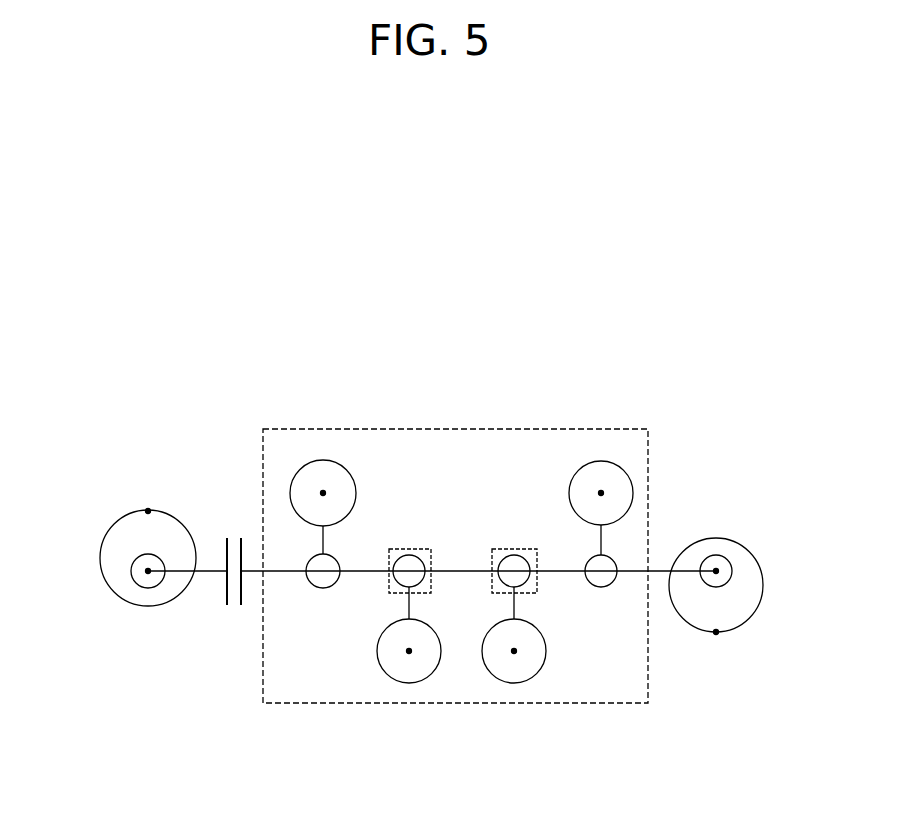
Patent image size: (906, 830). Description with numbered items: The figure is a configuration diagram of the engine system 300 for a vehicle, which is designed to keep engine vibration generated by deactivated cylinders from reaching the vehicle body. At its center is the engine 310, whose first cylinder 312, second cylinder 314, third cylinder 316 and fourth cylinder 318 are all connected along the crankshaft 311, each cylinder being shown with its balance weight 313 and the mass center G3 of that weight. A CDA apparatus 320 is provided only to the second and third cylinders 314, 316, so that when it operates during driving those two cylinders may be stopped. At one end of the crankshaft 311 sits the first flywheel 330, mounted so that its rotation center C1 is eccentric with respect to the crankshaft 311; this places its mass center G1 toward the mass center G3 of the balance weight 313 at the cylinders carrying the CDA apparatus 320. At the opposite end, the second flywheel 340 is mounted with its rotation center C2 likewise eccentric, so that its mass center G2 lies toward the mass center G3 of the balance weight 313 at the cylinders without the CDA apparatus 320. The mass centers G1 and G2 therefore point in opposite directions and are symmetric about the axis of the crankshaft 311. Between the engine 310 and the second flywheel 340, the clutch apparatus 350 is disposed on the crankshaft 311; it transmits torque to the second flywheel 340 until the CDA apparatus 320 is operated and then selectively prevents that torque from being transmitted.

The engine system 300 is at (392, 335).
The engine 310 is at (457, 429).
The crankshaft 311 is at (283, 572).
The first cylinder 312 is at (323, 588).
The balance weight 313 is at (302, 465).
The second cylinder 314 is at (409, 553).
The third cylinder 316 is at (514, 553).
The fourth cylinder 318 is at (601, 588).
The CDA apparatus 320 is at (389, 593).
The first flywheel 330 is at (752, 617).
The second flywheel 340 is at (108, 588).
The clutch apparatus 350 is at (232, 528).
The mass center of the first flywheel G1 is at (716, 635).
The mass center of the second flywheel G2 is at (148, 509).
The mass center of the balance weight G3 is at (323, 493).
The rotation center of the first flywheel C1 is at (716, 568).
The rotation center of the second flywheel C2 is at (148, 574).